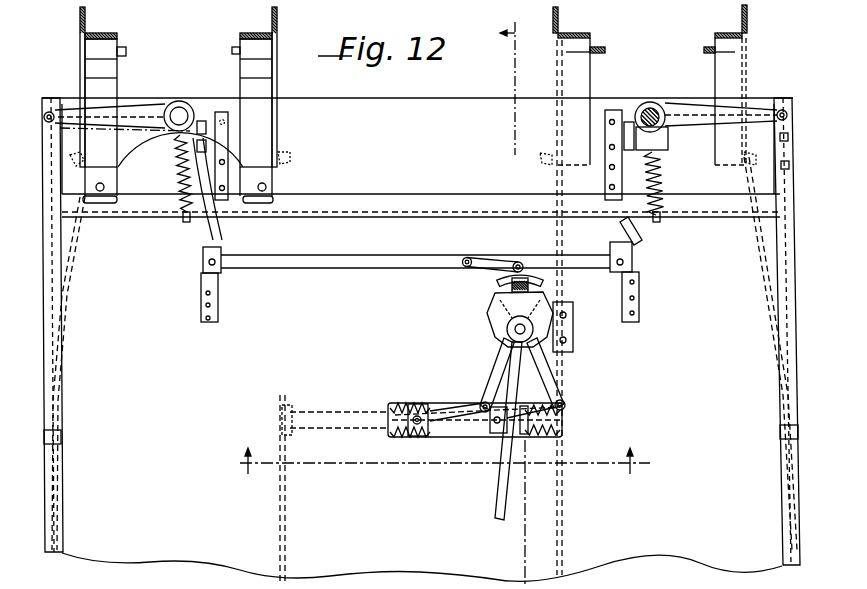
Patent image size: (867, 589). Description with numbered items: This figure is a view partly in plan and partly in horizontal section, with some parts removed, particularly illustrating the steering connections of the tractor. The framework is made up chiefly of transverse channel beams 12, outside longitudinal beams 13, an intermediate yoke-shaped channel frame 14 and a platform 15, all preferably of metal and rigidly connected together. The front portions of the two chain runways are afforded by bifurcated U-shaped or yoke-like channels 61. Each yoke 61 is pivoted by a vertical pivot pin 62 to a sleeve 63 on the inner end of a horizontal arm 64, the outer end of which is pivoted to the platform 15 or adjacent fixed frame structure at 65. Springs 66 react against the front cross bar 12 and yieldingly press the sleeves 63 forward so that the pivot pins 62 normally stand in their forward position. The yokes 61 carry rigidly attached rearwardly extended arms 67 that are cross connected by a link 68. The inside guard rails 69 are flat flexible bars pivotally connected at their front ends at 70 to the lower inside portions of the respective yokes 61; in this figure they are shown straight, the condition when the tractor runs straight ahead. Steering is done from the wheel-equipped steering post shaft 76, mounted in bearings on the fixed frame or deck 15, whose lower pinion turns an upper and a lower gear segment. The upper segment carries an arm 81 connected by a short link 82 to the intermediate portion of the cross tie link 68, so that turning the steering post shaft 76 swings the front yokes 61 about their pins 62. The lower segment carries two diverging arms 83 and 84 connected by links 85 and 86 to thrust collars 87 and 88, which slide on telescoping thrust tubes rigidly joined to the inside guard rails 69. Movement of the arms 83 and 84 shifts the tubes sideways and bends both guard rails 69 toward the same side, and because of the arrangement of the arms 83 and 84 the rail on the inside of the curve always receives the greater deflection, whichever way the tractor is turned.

The transverse channel beam 12 is at (368, 208).
The outside longitudinal beam 13 is at (58, 502).
The intermediate yoke-shaped channel frame 14 is at (437, 512).
The platform 15 is at (623, 566).
The front yoke 61 is at (92, 30).
The vertical pivot pin 62 is at (179, 110).
The sleeve 63 is at (199, 120).
The horizontal arm 64 is at (70, 109).
The arm pivot 65 is at (49, 111).
The spring 66 is at (176, 184).
The rearwardly extended arm 67 is at (202, 241).
The link 68 is at (393, 262).
The inside guard rail 69 is at (276, 525).
The pivotal connection 70 is at (291, 160).
The steering post shaft 76 is at (506, 490).
The arm 81 is at (530, 280).
The short link 82 is at (495, 260).
The diverging arm 83 is at (493, 372).
The diverging arm 84 is at (553, 378).
The link 85 is at (449, 424).
The link 86 is at (566, 423).
The thrust collar 87 is at (418, 436).
The thrust collar 88 is at (497, 436).